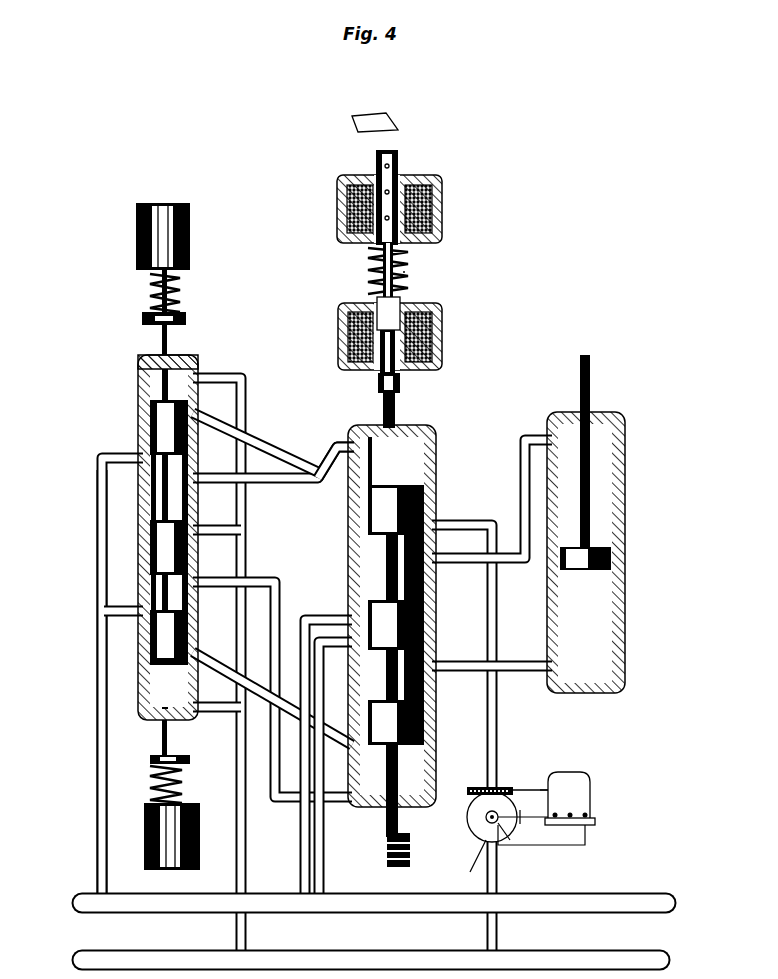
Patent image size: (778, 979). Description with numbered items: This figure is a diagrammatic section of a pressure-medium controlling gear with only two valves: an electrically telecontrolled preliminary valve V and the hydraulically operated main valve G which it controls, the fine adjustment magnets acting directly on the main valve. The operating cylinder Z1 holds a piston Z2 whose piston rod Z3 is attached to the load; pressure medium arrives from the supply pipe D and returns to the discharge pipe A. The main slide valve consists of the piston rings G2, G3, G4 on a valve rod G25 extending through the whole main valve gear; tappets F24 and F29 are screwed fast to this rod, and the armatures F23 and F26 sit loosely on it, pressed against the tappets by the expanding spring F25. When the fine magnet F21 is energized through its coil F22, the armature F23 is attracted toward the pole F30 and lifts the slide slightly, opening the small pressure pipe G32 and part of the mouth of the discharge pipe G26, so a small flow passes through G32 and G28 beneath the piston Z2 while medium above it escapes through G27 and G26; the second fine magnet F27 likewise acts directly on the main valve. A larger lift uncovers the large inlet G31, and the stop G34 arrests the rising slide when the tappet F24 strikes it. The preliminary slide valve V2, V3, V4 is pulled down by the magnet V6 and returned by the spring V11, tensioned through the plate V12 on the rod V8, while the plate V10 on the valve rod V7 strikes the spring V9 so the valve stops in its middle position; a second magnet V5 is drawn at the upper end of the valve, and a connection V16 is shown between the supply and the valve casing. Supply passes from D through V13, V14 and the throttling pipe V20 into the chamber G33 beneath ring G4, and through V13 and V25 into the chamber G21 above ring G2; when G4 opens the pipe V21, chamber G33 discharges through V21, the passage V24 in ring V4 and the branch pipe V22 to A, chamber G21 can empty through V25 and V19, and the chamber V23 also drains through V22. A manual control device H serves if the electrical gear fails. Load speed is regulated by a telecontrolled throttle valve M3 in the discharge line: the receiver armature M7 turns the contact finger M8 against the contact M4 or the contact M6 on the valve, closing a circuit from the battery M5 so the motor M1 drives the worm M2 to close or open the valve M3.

The preliminary valve V is at (156, 526).
The piston ring V2 is at (150, 430).
The piston ring V3 is at (150, 536).
The piston ring V4 is at (150, 638).
The upper solenoid V5 is at (160, 214).
The magnet V6 is at (200, 840).
The valve rod V7 is at (160, 341).
The rod V8 is at (162, 741).
The spring V9 is at (182, 302).
The plate V10 is at (186, 318).
The spring V11 is at (185, 790).
The plate V12 is at (190, 761).
The pipe V13 is at (100, 776).
The pipe V14 is at (124, 609).
The branch pipe V16 is at (135, 461).
The pipe V19 is at (220, 535).
The pipe V20 is at (274, 580).
The pipe V21 is at (206, 664).
The branch pipe V22 is at (215, 713).
The chamber V23 is at (150, 690).
The passage V24 is at (190, 630).
The pipe V25 is at (280, 484).
The fine magnet F21 is at (433, 208).
The coil F22 is at (347, 208).
The armature F23 is at (370, 256).
The tappet F24 is at (396, 166).
The spring F25 is at (406, 272).
The armature F26 is at (401, 302).
The fine magnet F27 is at (433, 340).
The tappet F29 is at (401, 386).
The pole F30 is at (383, 204).
The main valve G is at (391, 622).
The piston ring G2 is at (368, 511).
The piston ring G3 is at (434, 612).
The piston ring G4 is at (434, 735).
The chamber G21 is at (343, 446).
The valve rod G25 is at (372, 450).
The discharge pipe G26 is at (468, 524).
The pipe G27 is at (520, 470).
The pipe G28 is at (517, 663).
The large inlet G31 is at (338, 616).
The small pressure pipe G32 is at (347, 632).
The chamber G33 is at (380, 790).
The stop G34 is at (380, 117).
The manual control device H is at (386, 853).
The operating cylinder Z1 is at (625, 513).
The piston Z2 is at (586, 571).
The piston rod Z3 is at (591, 392).
The motor M1 is at (591, 800).
The worm M2 is at (506, 787).
The throttle valve M3 is at (477, 826).
The contact M4 is at (510, 842).
The battery M5 is at (545, 790).
The contact M6 is at (530, 835).
The armature M7 is at (486, 818).
The contact finger M8 is at (470, 868).
The pressure pipe D is at (606, 892).
The discharge pipe A is at (606, 949).